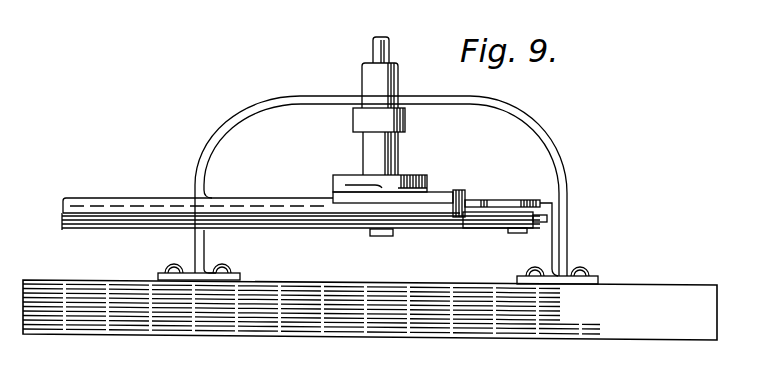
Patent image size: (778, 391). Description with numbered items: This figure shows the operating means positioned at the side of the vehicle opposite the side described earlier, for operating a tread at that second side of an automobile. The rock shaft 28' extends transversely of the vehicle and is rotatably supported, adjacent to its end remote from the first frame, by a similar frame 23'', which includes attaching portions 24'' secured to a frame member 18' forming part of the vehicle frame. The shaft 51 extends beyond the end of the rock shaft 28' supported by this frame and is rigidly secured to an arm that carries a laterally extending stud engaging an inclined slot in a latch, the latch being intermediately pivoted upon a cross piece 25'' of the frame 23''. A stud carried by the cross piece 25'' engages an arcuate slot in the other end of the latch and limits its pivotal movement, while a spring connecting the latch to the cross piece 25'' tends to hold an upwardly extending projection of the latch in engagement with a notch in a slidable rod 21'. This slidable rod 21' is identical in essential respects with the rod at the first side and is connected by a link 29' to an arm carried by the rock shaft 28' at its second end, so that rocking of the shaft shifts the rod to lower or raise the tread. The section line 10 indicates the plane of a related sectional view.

The shaft 51 is at (385, 55).
The rock shaft 28' is at (400, 141).
The frame 23'' is at (398, 186).
The cross piece 25'' is at (510, 221).
The slidable rod 21' is at (261, 190).
The link 29' is at (301, 234).
The attaching portions 24'' is at (408, 274).
The frame member 18' is at (370, 328).
The section line 10 is at (70, 243).